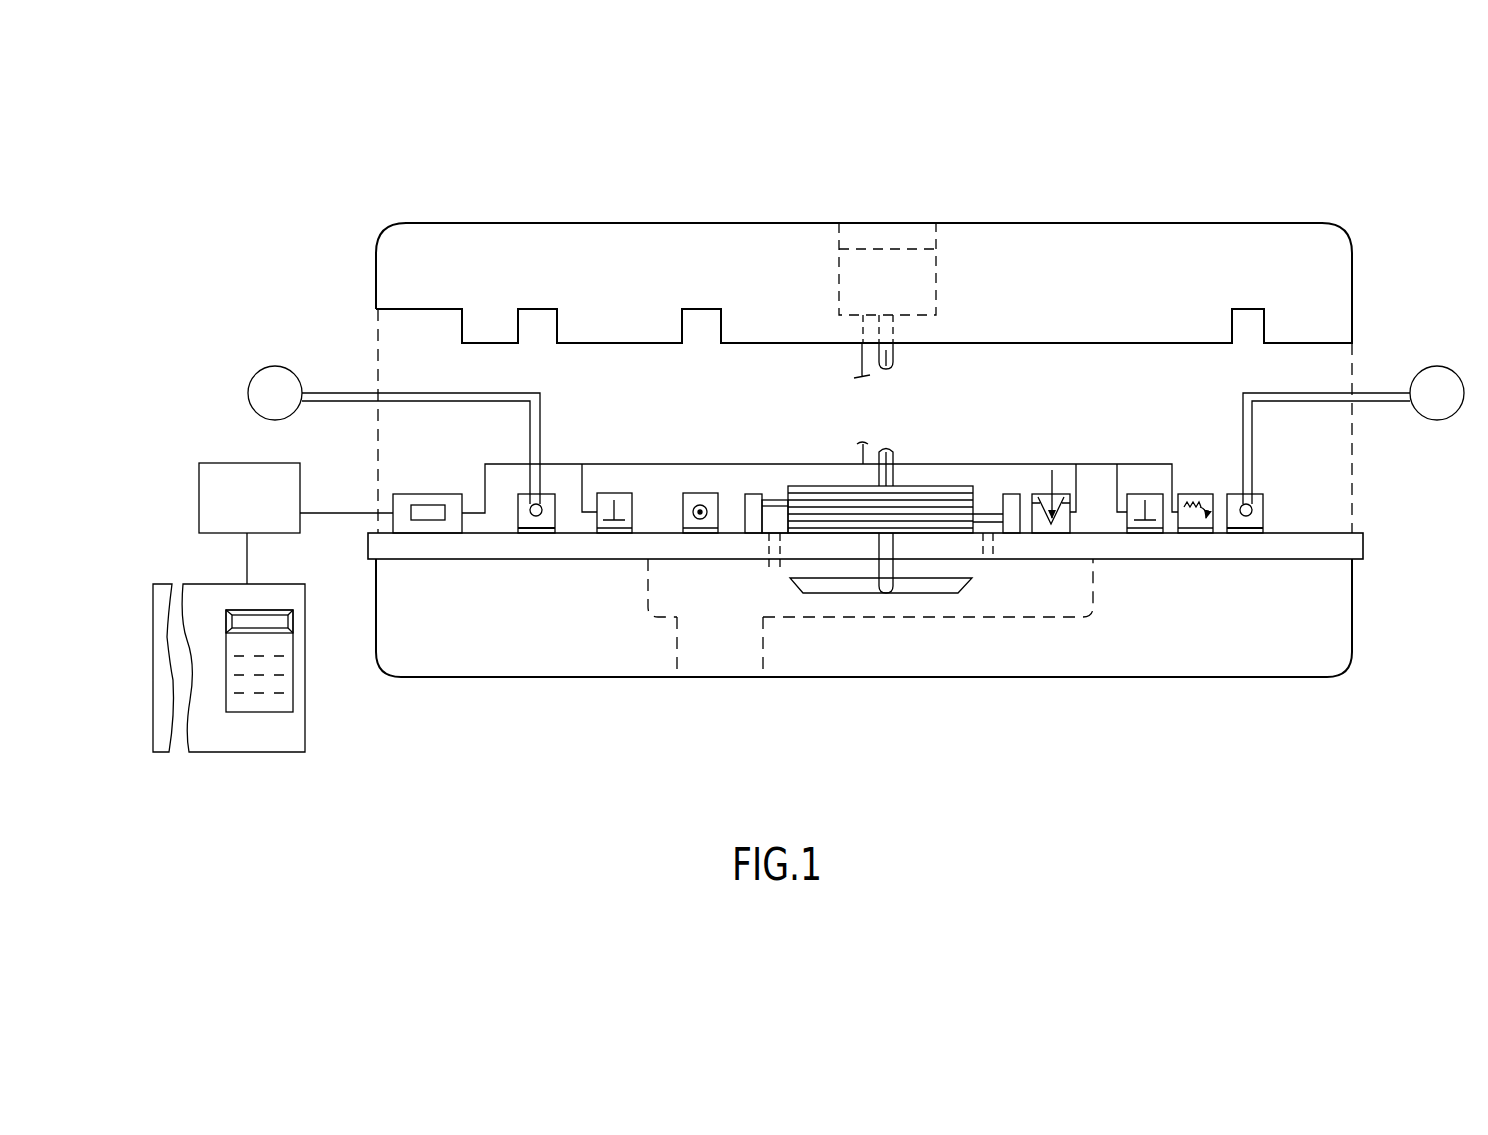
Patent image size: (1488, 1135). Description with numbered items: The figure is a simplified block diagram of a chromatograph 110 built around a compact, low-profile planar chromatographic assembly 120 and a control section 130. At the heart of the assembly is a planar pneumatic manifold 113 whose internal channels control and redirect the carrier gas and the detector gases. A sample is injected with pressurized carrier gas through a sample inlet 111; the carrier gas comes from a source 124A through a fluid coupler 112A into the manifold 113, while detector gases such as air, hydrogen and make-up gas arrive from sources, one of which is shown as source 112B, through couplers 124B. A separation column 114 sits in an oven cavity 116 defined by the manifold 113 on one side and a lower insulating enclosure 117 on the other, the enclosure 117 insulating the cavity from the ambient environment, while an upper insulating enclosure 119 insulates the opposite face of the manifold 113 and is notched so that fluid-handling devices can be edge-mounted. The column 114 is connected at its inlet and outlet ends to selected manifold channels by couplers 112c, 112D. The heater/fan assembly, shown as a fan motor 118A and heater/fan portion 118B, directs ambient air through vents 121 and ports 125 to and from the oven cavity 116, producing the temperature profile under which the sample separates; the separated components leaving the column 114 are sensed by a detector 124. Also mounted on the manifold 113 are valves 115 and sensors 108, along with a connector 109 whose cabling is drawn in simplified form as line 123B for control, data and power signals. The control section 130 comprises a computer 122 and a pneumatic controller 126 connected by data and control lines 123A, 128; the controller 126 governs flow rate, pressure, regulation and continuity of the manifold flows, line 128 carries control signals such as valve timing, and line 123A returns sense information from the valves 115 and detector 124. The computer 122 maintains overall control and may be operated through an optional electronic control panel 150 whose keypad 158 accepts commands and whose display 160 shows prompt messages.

The chromatograph 110 is at (743, 180).
The lower insulating enclosure 117 is at (1352, 280).
The fan motor 118A is at (938, 287).
The upper insulating enclosure 119 is at (1352, 620).
The planar pneumatic manifold 113 is at (1363, 540).
The carrier gas source 124A is at (249, 392).
The detector gas couplers 124B is at (1432, 420).
The pneumatic controller 126 is at (199, 492).
The control and data line 123A is at (333, 512).
The data and control line 128 is at (247, 553).
The cabling line 123B is at (627, 464).
The edge- or surface-mounted connector 109 is at (424, 533).
The fluid coupler 112A is at (530, 534).
The valve 115 is at (604, 534).
The sample inlet 111 is at (698, 534).
The column inlet coupler 112c is at (752, 494).
The separation column 114 is at (952, 486).
The column outlet coupler 112D is at (1000, 535).
The detector 124 is at (1052, 470).
The sensor 108 is at (1195, 535).
The detector gas source 112B is at (1245, 535).
The port 125 is at (770, 562).
The heater/fan assembly 118B is at (911, 606).
The oven cavity 116 is at (1075, 617).
The vent 121 is at (727, 663).
The planar chromatographic assembly 120 is at (556, 716).
The computer 122 is at (218, 753).
The electronic control panel 150 is at (273, 712).
The display 160 is at (277, 622).
The keypad 158 is at (288, 680).
The control section 130 is at (361, 766).